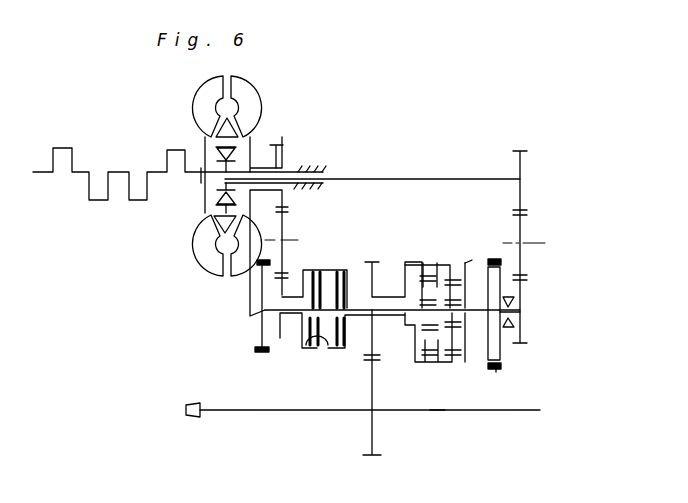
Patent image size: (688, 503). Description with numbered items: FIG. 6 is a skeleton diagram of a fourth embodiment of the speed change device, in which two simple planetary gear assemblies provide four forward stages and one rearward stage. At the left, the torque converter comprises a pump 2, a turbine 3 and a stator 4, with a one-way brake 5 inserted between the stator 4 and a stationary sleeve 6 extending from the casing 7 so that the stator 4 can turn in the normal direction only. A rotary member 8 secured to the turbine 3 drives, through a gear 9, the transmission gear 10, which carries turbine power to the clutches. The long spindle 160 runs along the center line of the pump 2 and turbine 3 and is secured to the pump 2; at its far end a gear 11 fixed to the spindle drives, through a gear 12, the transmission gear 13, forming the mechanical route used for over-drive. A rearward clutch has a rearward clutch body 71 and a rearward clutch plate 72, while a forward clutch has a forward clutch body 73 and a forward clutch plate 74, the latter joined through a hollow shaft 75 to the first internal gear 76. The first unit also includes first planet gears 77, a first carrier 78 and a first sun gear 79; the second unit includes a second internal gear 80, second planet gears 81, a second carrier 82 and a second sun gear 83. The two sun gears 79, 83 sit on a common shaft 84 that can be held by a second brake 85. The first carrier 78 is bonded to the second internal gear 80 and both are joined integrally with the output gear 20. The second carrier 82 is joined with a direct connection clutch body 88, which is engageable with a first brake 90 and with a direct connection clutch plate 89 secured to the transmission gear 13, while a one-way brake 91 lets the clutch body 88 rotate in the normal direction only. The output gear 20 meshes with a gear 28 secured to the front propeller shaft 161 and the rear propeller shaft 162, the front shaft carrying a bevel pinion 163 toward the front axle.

The pump 2 is at (215, 93).
The turbine 3 is at (241, 96).
The stator 4 is at (234, 130).
The one-way brake 5 is at (218, 152).
The stationary sleeve 6 is at (251, 166).
The casing 7 is at (316, 167).
The rotary member 8 is at (284, 146).
The gear 9 is at (289, 212).
The transmission gear 10 is at (287, 337).
The gear 11 is at (528, 159).
The gear 12 is at (524, 221).
The transmission gear 13 is at (524, 283).
The output gear 20 is at (380, 267).
The gear 28 is at (373, 398).
The rearward clutch body 71 is at (316, 348).
The rearward clutch plate 72 is at (345, 350).
The forward clutch body 73 is at (322, 268).
The forward clutch plate 74 is at (345, 268).
The hollow shaft 75 is at (357, 268).
The first internal gear 76 is at (416, 267).
The first planet gears 77 is at (409, 267).
The first carrier 78 is at (438, 267).
The first sun gear 79 is at (378, 359).
The second internal gear 80 is at (459, 267).
The second planet gears 81 is at (475, 268).
The second carrier 82 is at (469, 332).
The second sun gear 83 is at (458, 365).
The common shaft 84 is at (261, 312).
The second brake 85 is at (257, 353).
The direct connection clutch body 88 is at (501, 347).
The direct connection clutch plate 89 is at (502, 366).
The first brake 90 is at (496, 372).
The one-way brake 91 is at (516, 324).
The long spindle 160 is at (400, 178).
The front propeller shaft 161 is at (267, 411).
The rear propeller shaft 162 is at (438, 411).
The bevel pinion 163 is at (192, 418).